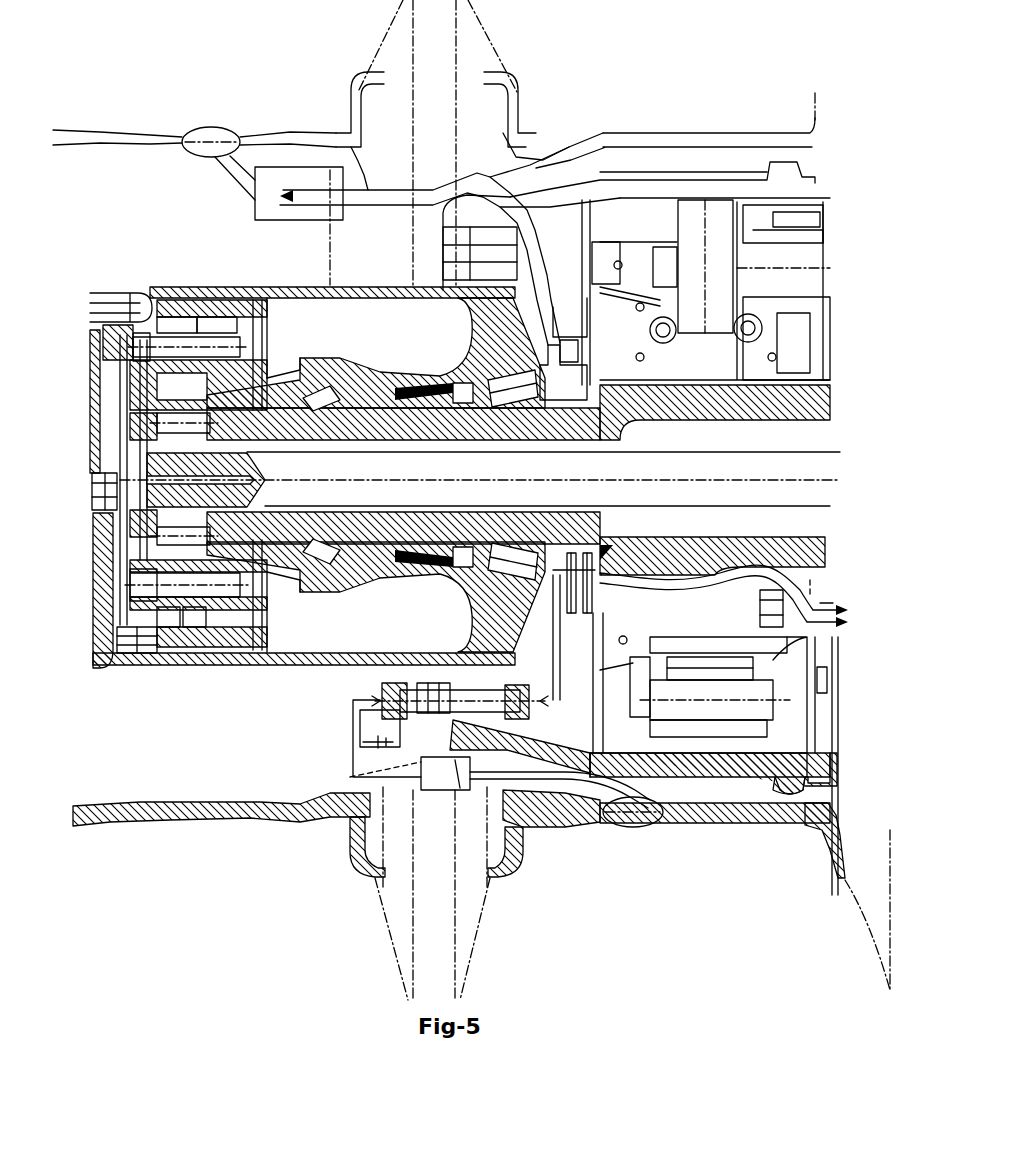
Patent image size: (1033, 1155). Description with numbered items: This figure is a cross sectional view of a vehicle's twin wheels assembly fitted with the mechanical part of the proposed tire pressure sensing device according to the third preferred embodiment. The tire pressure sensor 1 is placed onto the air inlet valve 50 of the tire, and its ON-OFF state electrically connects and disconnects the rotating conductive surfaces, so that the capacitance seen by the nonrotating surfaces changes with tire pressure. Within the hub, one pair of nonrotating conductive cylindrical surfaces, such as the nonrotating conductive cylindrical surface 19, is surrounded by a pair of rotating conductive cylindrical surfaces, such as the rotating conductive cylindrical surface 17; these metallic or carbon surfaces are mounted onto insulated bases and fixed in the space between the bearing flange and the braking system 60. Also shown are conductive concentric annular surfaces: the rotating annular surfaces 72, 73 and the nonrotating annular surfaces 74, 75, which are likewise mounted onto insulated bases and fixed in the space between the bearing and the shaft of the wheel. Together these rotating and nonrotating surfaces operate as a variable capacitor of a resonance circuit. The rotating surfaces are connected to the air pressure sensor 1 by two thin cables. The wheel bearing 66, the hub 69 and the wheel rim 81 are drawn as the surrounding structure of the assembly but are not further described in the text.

The tire pressure sensor 1 is at (310, 220).
The rotating conductive cylindrical surface 17 is at (410, 388).
The nonrotating conductive cylindrical surface 19 is at (417, 548).
The air inlet valve 50 is at (210, 126).
The braking system 60 is at (607, 330).
The wheel bearing 66 is at (313, 553).
The wheel hub 69 is at (273, 485).
The rotating conductive concentric annular surface 72 is at (593, 557).
The rotating conductive concentric annular surface 73 is at (570, 557).
The nonrotating conductive concentric annular surface 74 is at (585, 603).
The nonrotating conductive concentric annular surface 75 is at (605, 552).
The wheel rim 81 is at (763, 820).